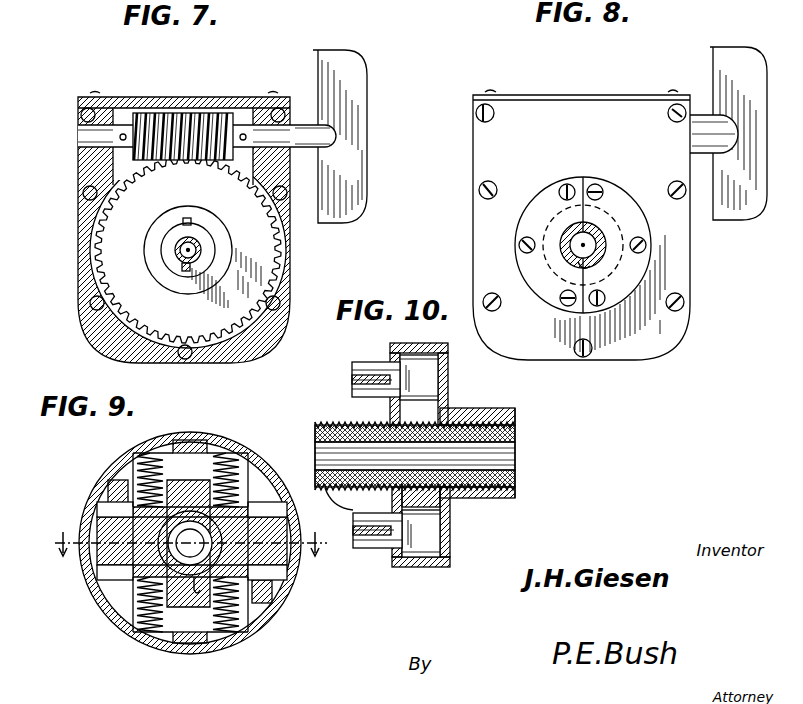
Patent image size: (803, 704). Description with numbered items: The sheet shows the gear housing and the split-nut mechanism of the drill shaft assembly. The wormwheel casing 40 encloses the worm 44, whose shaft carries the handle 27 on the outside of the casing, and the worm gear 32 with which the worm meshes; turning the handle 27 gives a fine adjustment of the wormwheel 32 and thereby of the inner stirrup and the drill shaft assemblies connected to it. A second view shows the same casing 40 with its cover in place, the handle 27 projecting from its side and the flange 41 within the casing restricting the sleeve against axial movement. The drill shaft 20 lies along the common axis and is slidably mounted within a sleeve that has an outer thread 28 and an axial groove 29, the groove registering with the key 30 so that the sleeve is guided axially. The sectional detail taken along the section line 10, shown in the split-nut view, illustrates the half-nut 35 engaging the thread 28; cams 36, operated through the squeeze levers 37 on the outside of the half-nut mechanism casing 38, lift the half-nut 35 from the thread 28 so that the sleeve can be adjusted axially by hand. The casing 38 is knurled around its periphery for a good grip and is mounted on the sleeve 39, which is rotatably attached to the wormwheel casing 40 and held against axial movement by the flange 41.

In FIG. 9, the section line 10— 10 is at (189, 534).
In FIG. 7, the drill shaft 20 is at (173, 237).
In FIG. 8, the drill shaft 20 is at (572, 230).
In FIG. 9, the drill shaft 20 is at (167, 557).
In FIG. 10, the drill shaft 20 is at (517, 472).
In FIG. 7, the handle 27 is at (357, 83).
In FIG. 8, the handle 27 is at (740, 57).
In FIG. 9, the outer thread 28 is at (197, 507).
In FIG. 10, the outer thread 28 is at (337, 422).
In FIG. 8, the axial groove 29 is at (588, 266).
In FIG. 9, the axial groove 29 is at (198, 604).
In FIG. 7, the key 30 is at (185, 270).
In FIG. 7, the worm gear 32 is at (262, 257).
In FIG. 9, the half-nut 35 is at (175, 490).
In FIG. 10, the half-nut 35 is at (423, 498).
In FIG. 9, the cams 36 is at (283, 520).
In FIG. 10, the cams 36 is at (425, 377).
In FIG. 10, the squeeze levers 37 is at (352, 378).
In FIG. 9, the half-nut mechanism casing 38 is at (118, 468).
In FIG. 10, the half-nut mechanism casing 38 is at (392, 345).
In FIG. 10, the sleeve 39 is at (492, 410).
In FIG. 7, the wormwheel casing 40 is at (80, 217).
In FIG. 8, the wormwheel casing 40 is at (488, 142).
In FIG. 8, the flange 41 is at (612, 213).
In FIG. 7, the worm 44 is at (187, 117).